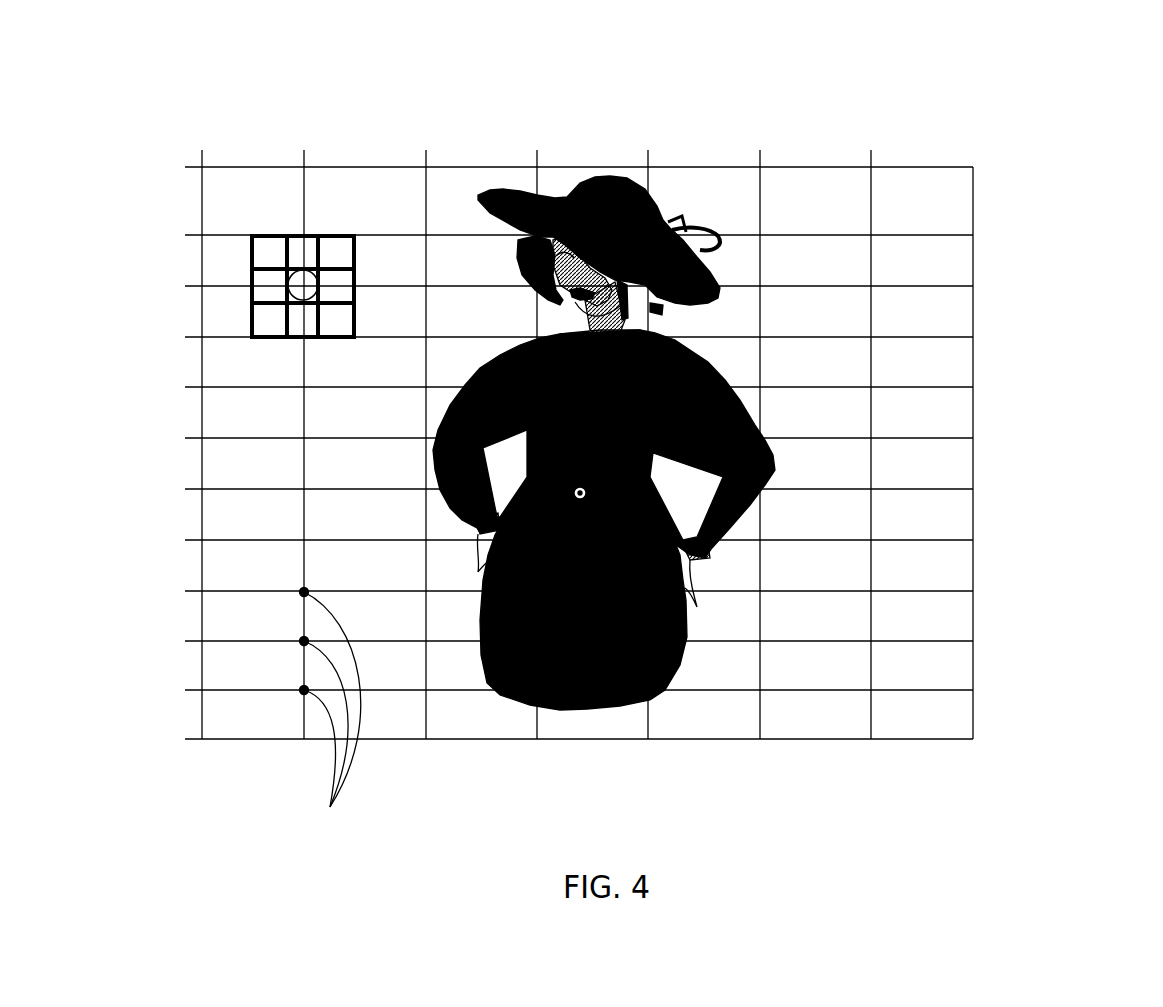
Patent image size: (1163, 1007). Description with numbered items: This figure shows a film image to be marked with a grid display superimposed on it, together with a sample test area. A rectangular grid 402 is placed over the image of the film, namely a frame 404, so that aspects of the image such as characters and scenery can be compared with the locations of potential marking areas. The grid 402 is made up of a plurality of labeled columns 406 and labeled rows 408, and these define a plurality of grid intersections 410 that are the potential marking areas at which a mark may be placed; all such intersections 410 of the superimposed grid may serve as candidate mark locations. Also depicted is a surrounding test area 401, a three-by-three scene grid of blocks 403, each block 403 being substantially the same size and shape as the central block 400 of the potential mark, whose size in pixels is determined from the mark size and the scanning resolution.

The block of the potential mark 400 is at (305, 276).
The surrounding test area 401 is at (262, 222).
The rectangular grid 402 is at (975, 505).
The block of the surrounding area 403 is at (262, 322).
The frame 404 is at (1043, 357).
The labeled columns 406 is at (1003, 131).
The labeled rows 408 is at (168, 772).
The grid intersections 410 is at (330, 716).